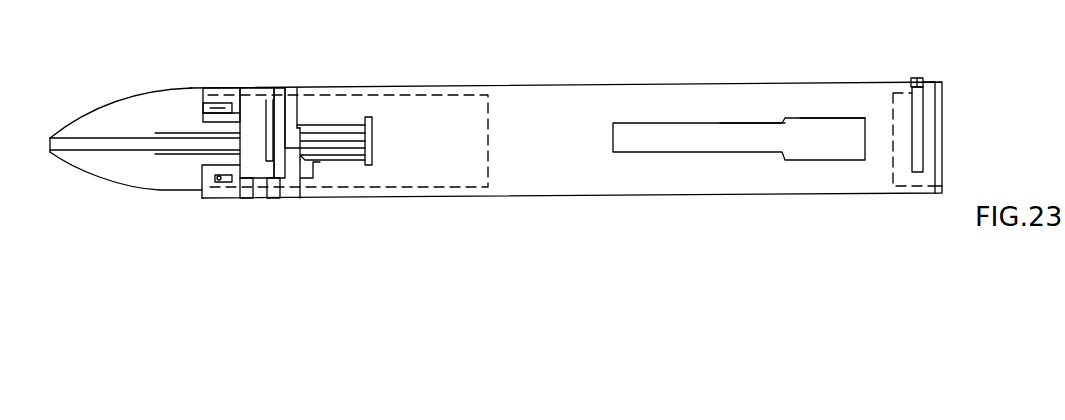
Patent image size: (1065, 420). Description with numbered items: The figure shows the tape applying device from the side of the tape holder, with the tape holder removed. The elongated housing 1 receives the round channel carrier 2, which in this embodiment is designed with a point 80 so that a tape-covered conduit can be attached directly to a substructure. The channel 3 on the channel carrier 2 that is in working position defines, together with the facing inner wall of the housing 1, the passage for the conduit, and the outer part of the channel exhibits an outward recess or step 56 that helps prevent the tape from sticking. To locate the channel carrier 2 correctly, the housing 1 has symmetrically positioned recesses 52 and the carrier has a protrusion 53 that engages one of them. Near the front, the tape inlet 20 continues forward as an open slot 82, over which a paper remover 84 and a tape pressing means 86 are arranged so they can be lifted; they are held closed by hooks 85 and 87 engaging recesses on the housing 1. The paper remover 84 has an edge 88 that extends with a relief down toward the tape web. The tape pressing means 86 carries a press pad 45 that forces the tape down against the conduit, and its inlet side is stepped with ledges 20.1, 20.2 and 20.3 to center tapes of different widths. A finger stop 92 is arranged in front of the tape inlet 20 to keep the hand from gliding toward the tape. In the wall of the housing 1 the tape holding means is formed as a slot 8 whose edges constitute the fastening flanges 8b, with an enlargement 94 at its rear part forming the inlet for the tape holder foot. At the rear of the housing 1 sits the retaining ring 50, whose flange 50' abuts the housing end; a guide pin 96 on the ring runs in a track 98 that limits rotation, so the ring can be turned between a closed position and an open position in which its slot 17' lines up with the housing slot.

The housing 1 is at (706, 198).
The channel carrier 2 is at (80, 167).
The channel 3 is at (108, 138).
The slot 8 is at (602, 126).
The fastening flanges 8b is at (722, 128).
The slot of the ring 17' is at (965, 173).
The tape inlet opening 20 is at (360, 120).
The ledge 20.1 is at (320, 128).
The ledge 20.2 is at (298, 130).
The ledge 20.3 is at (296, 128).
The press pad 45 is at (283, 150).
The retaining ring 50 is at (961, 137).
The flange 50' is at (956, 76).
The recesses 52 is at (205, 186).
The protrusion 53 is at (223, 182).
The recess or step 56 is at (184, 154).
The point 80 is at (72, 126).
The open slot 82 is at (206, 120).
The paper remover 84 is at (245, 90).
The hook 85 is at (258, 199).
The tape pressing means 86 is at (272, 88).
The hook 87 is at (300, 198).
The edge 88 is at (259, 131).
The finger stop 92 is at (373, 145).
The enlargement 94 is at (832, 125).
The guide pin 96 is at (915, 152).
The track 98 is at (914, 80).